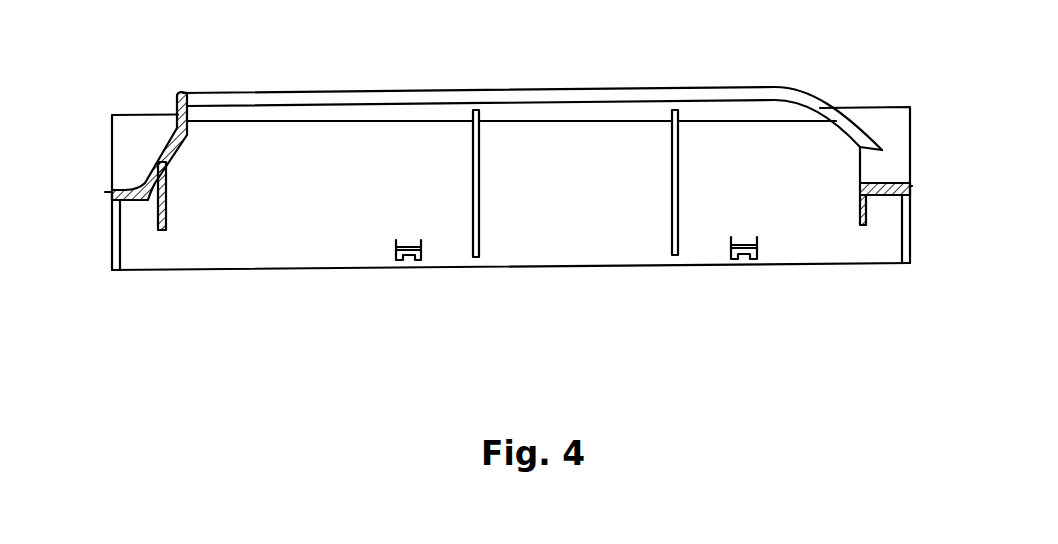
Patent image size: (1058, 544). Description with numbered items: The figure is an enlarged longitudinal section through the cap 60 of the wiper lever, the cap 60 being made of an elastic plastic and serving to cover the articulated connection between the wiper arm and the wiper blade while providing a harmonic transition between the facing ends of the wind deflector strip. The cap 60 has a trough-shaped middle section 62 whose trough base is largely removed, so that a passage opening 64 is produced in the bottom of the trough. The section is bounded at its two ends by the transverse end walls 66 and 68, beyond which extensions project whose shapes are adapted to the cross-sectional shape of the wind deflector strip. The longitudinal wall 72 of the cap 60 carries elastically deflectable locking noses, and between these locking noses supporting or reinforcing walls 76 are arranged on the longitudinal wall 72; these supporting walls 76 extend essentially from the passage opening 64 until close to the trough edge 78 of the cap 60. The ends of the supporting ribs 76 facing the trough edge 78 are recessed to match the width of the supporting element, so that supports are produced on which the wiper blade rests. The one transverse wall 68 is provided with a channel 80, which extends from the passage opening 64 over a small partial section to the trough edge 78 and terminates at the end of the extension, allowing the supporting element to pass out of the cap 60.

The cap 60 is at (773, 79).
The trough-shaped middle section 62 is at (613, 87).
The passage opening 64 is at (403, 100).
The transverse end wall 66 is at (167, 158).
The transverse end wall 68 is at (860, 191).
The longitudinal wall 72 is at (273, 243).
The supporting wall 76 is at (480, 203).
The trough edge 78 is at (347, 270).
The channel 80 is at (895, 162).